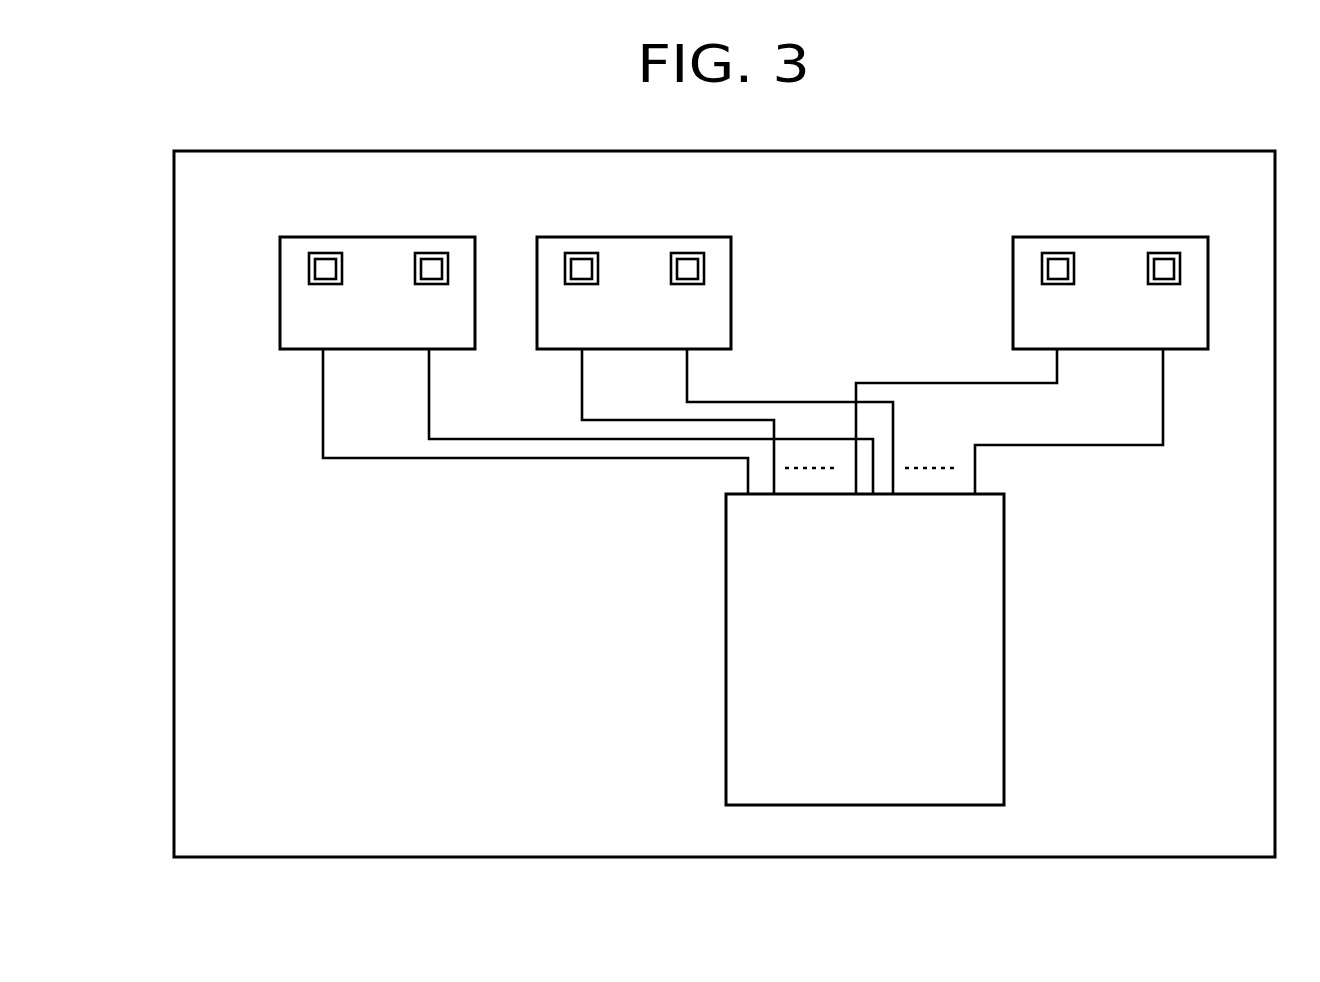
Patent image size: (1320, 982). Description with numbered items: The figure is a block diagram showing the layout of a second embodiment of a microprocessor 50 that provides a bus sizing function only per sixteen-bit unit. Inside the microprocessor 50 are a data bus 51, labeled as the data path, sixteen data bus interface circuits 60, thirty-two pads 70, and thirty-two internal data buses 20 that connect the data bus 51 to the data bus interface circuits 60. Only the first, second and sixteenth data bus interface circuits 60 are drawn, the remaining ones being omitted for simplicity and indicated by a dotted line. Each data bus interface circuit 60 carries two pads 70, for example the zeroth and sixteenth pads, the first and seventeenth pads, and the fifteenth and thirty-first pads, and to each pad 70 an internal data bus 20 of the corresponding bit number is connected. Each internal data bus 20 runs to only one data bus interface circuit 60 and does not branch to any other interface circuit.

The microprocessor 50 is at (172, 822).
The data bus 51 is at (1004, 610).
The data bus interface circuit 60 is at (280, 330).
The pad 70 is at (316, 253).
The internal data bus 20 is at (342, 458).